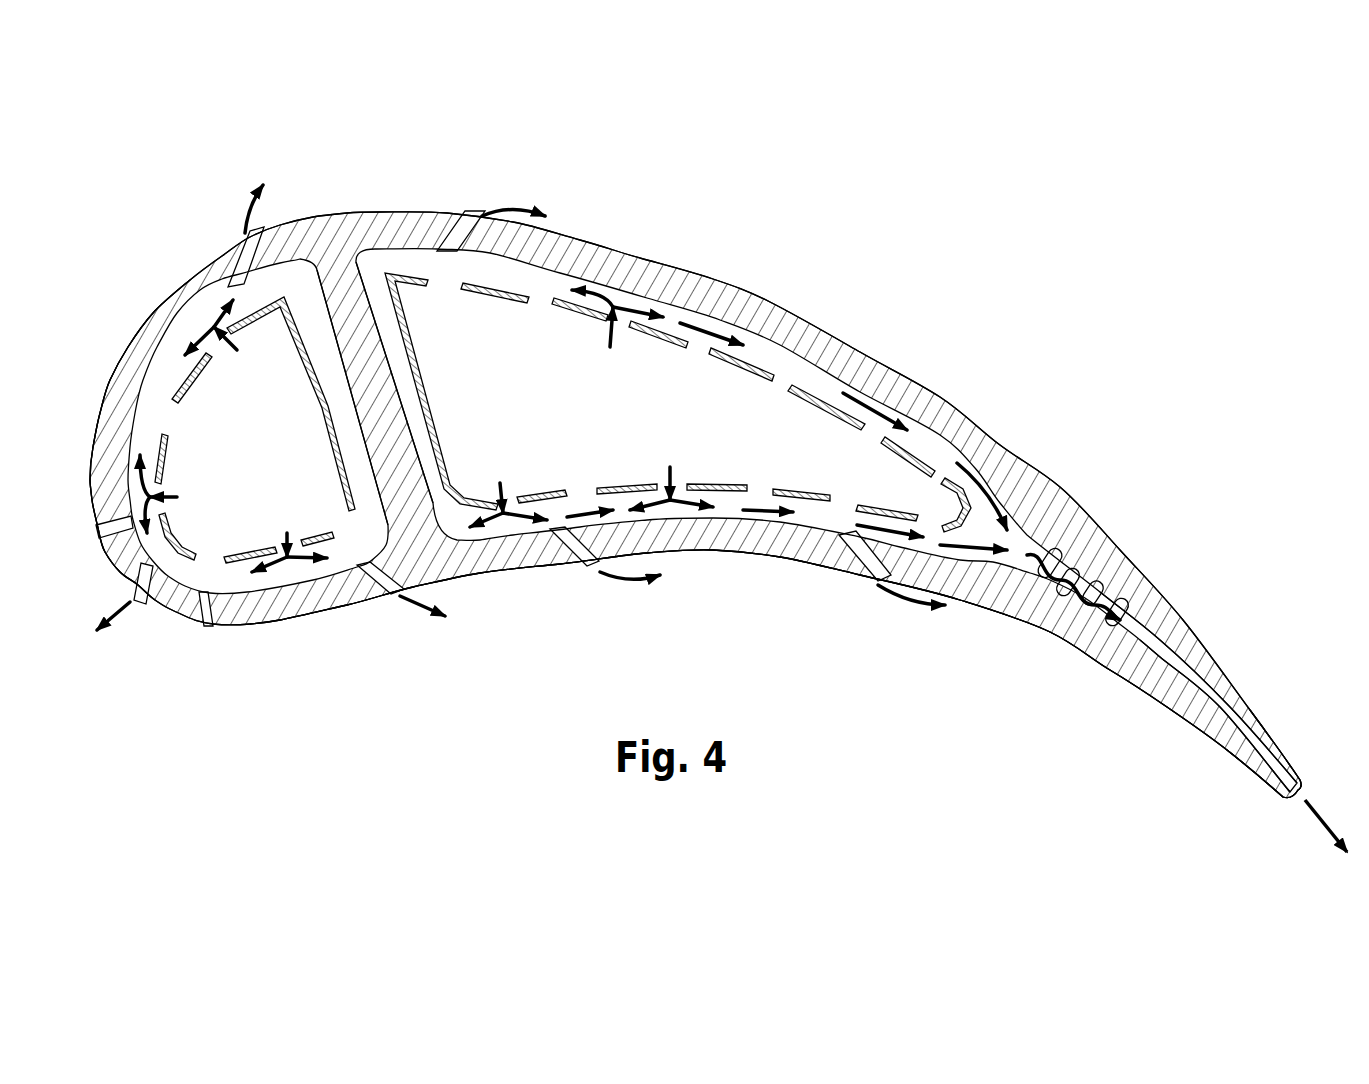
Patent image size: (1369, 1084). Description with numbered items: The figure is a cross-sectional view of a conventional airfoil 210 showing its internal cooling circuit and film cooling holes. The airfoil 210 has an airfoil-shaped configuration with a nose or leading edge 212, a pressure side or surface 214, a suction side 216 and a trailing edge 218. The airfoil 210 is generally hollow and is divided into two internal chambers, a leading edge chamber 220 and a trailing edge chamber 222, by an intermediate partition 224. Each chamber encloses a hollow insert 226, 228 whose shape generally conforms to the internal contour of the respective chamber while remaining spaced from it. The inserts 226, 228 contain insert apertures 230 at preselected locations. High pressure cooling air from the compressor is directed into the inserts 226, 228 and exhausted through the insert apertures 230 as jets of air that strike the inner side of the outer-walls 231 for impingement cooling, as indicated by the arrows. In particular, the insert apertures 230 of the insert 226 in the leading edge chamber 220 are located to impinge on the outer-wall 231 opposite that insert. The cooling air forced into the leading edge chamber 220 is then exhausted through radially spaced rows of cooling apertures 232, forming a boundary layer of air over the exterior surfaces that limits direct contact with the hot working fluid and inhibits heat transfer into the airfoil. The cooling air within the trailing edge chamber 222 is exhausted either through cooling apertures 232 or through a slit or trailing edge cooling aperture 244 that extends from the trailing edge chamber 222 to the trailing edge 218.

The airfoil 210 is at (203, 682).
The leading edge 212 is at (112, 488).
The pressure side 214 is at (519, 573).
The suction side 216 is at (668, 265).
The trailing edge 218 is at (1282, 798).
The leading edge chamber 220 is at (236, 468).
The trailing edge chamber 222 is at (618, 421).
The intermediate partition 224 is at (350, 330).
The hollow insert 226 is at (285, 298).
The hollow insert 228 is at (828, 402).
The insert apertures 230 is at (542, 300).
The outer-walls 231 is at (735, 305).
The cooling apertures 232 is at (449, 226).
The trailing edge cooling aperture 244 is at (1208, 680).